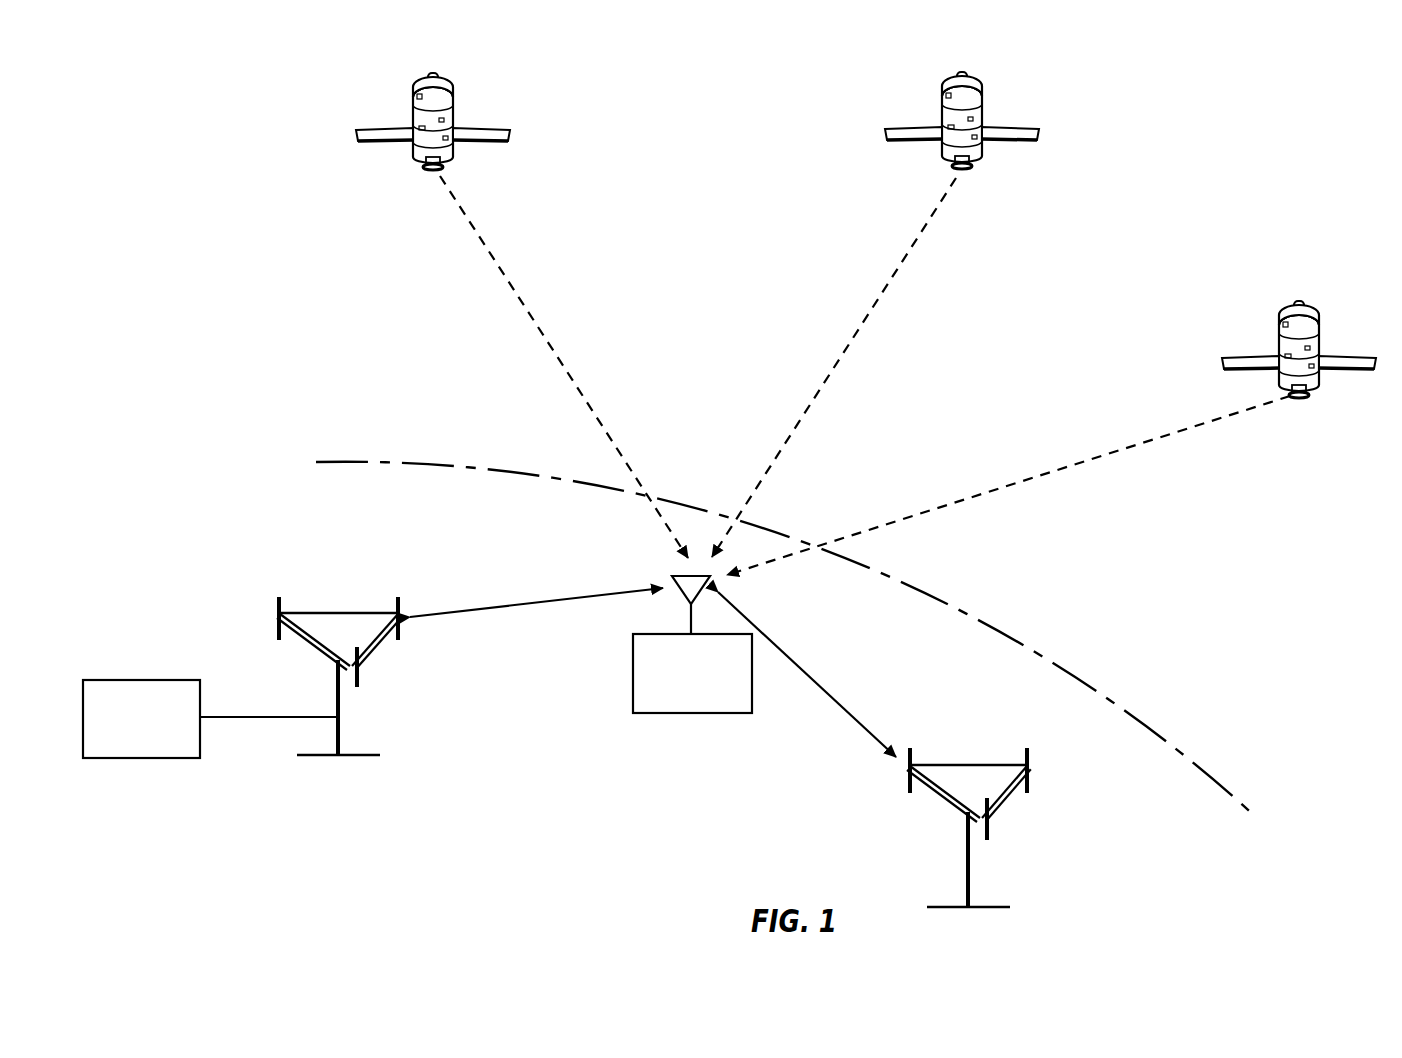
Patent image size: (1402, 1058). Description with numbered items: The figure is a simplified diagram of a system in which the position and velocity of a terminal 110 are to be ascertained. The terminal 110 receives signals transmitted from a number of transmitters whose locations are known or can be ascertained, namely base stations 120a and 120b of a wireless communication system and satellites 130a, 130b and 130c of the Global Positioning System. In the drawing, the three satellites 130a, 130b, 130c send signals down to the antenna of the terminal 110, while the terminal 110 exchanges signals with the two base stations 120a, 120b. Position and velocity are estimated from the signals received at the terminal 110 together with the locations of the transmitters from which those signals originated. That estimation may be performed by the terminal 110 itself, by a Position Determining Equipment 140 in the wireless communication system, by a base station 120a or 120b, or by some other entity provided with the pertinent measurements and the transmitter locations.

The terminal 110 is at (633, 678).
The base station 120a is at (345, 596).
The base station 120b is at (975, 748).
The satellite 130a is at (484, 128).
The satellite 130b is at (1014, 128).
The satellite 130c is at (1366, 341).
The Position Determining Equipment (PDE) 140 is at (136, 680).